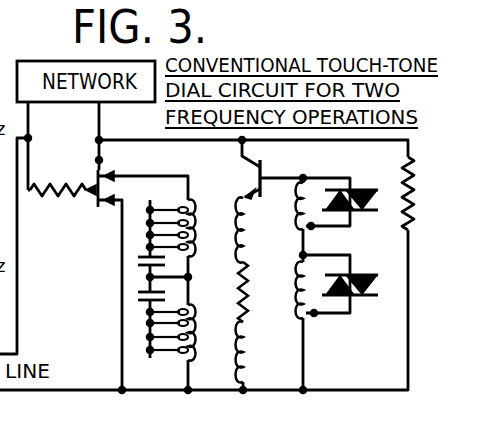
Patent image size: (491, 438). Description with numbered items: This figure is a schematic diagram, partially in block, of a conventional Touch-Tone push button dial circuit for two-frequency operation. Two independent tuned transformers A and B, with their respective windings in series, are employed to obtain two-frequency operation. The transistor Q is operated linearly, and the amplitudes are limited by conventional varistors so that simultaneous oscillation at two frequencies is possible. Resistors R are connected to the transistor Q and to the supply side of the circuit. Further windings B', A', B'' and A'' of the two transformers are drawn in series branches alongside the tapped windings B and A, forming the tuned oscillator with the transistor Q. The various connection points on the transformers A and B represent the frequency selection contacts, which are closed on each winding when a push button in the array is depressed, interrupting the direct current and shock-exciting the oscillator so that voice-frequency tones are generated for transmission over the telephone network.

The resistor R is at (231, 192).
The transistor Q is at (236, 169).
The tuned transformer B is at (201, 227).
The tuned transformer A is at (201, 332).
The high-frequency feedback winding B' is at (256, 259).
The low-frequency feedback winding A' is at (259, 351).
The high-frequency tuning winding B'' is at (322, 217).
The low-frequency tuning winding A'' is at (316, 304).